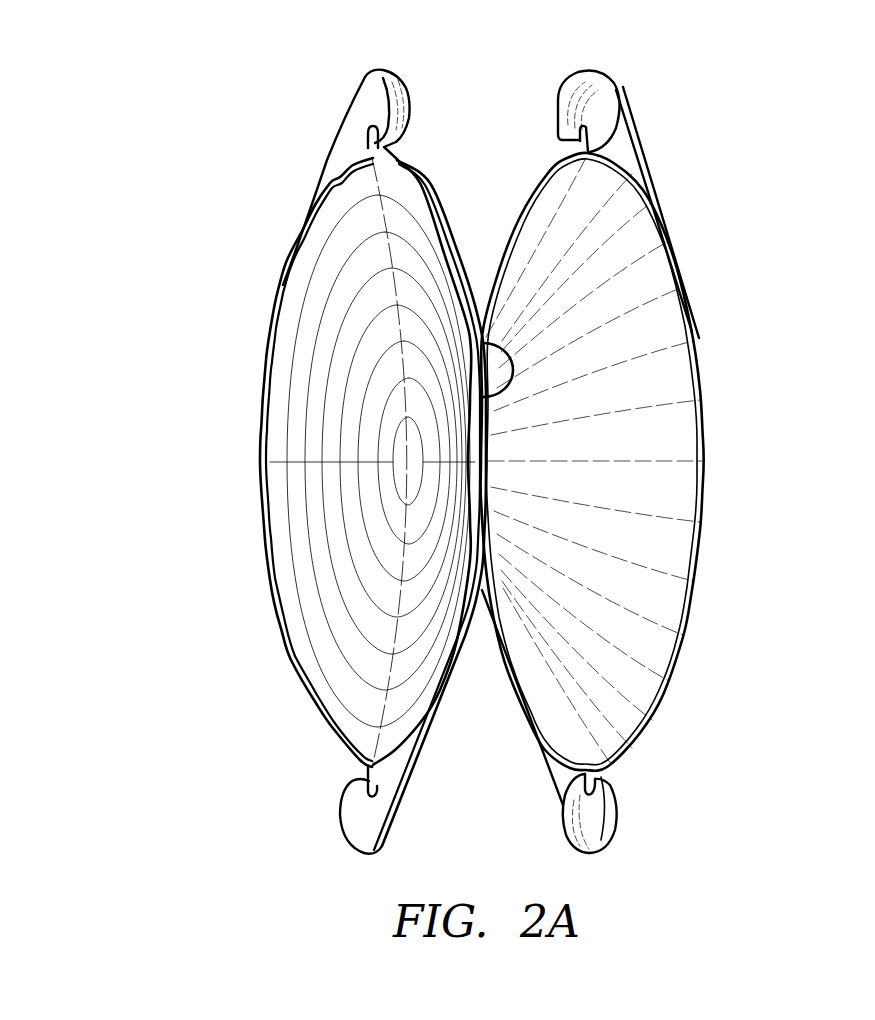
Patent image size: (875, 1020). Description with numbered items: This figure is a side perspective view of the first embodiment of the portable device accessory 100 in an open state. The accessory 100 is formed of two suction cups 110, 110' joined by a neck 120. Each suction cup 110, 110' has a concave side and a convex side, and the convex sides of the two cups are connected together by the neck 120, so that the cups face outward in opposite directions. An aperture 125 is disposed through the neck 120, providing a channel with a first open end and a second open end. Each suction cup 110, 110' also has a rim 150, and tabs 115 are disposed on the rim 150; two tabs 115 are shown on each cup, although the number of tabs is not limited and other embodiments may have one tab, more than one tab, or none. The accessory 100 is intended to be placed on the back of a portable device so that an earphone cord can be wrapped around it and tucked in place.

The portable device accessory 100 is at (222, 172).
The suction cup 110 is at (304, 504).
The suction cup 110' is at (669, 462).
The tabs 115 is at (356, 108).
The neck 120 is at (560, 466).
The aperture 125 is at (530, 387).
The rim 150 is at (286, 640).